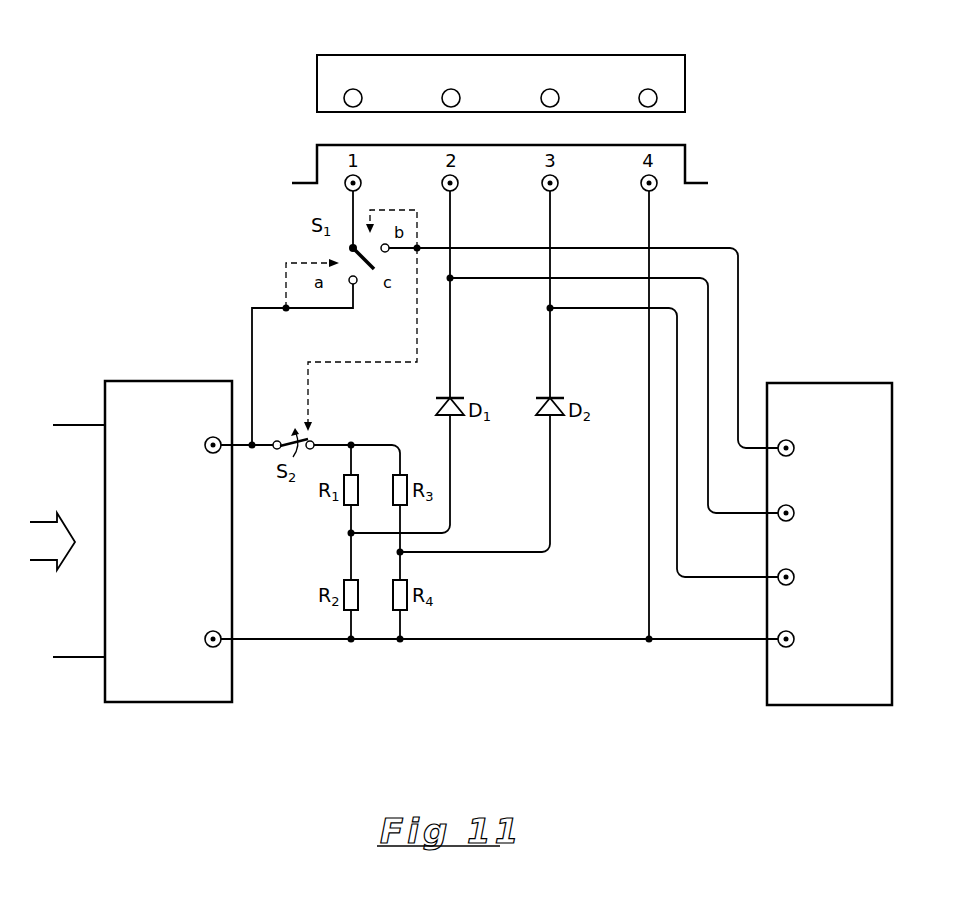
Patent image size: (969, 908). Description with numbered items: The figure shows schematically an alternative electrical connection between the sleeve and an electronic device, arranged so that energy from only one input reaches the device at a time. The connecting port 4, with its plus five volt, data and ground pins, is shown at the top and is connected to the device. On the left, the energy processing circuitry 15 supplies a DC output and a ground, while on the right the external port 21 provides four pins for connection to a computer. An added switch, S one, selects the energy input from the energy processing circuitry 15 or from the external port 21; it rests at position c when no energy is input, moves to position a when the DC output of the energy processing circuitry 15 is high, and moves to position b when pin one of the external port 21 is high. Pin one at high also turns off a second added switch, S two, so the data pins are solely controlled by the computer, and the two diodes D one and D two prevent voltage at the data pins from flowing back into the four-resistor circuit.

The connecting port 4 is at (290, 79).
The energy processing circuitry 15 is at (202, 678).
The external port 21 is at (798, 680).